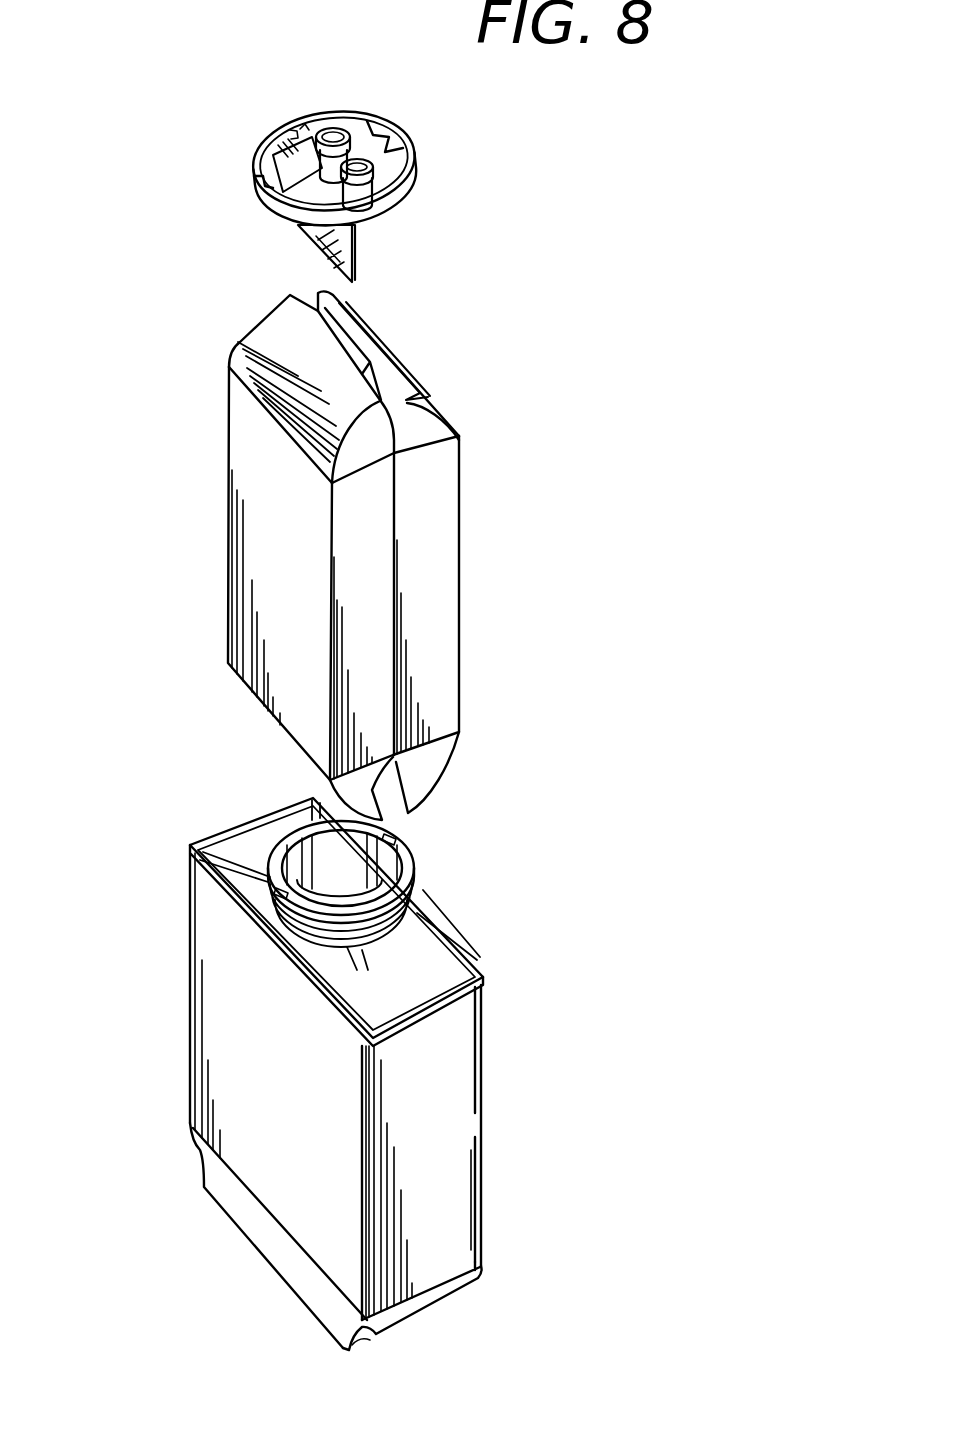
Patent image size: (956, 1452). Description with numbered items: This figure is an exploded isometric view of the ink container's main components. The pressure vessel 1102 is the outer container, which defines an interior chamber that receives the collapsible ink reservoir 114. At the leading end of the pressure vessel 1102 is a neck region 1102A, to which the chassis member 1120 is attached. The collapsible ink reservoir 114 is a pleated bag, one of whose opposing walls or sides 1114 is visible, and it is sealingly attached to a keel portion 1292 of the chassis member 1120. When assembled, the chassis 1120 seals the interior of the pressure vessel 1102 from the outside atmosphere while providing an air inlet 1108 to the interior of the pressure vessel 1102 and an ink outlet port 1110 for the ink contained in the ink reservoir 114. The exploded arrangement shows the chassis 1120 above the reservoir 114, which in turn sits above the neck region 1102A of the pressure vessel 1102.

The chassis member 1120 is at (243, 170).
The ink outlet port 1110 is at (335, 126).
The air inlet 1108 is at (372, 182).
The keel portion 1292 is at (353, 272).
The collapsible ink reservoir 114 is at (206, 368).
The bag wall 1114 is at (241, 446).
The pressure vessel 1102 is at (176, 989).
The neck region 1102A is at (417, 861).